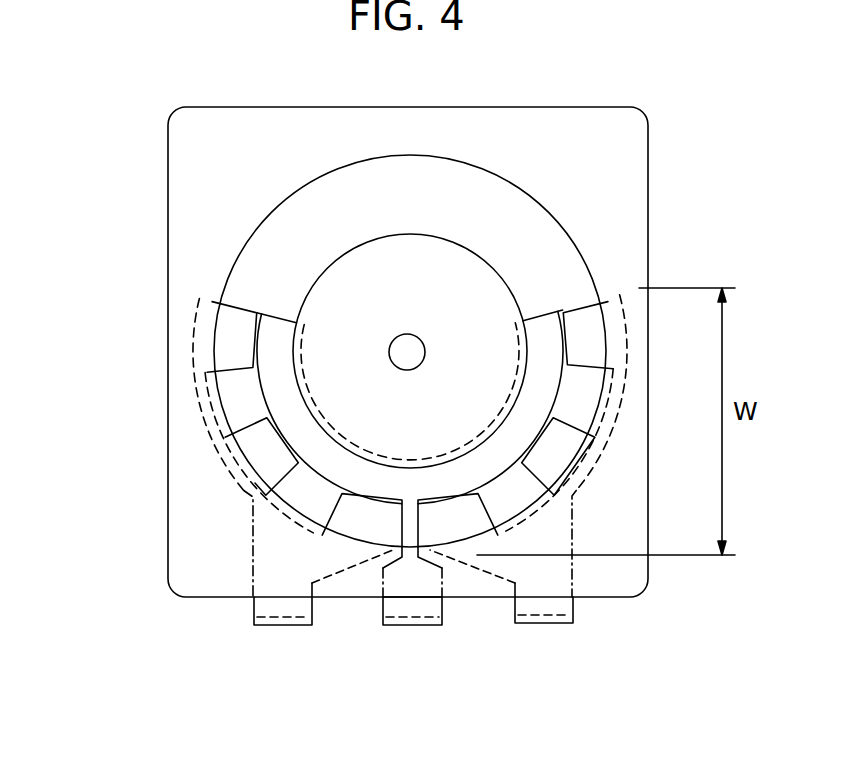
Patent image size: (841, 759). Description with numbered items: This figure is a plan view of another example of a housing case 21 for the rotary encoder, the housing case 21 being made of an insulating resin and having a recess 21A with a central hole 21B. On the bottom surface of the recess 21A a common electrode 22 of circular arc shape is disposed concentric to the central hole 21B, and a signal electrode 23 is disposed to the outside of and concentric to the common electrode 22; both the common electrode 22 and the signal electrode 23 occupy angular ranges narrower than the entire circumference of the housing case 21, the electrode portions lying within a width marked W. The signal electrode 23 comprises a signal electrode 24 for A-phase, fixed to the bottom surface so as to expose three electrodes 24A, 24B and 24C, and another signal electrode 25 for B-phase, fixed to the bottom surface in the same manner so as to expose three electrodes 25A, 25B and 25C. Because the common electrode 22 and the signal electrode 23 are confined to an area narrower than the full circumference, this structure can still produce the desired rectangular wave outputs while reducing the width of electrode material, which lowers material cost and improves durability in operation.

The housing case 21 is at (193, 148).
The recess 21A is at (532, 212).
The central hole 21B is at (398, 345).
The common electrode 22 is at (275, 340).
The signal electrode 23 is at (381, 514).
The signal electrode for A-phase 24 is at (207, 423).
The electrode 24A is at (218, 347).
The electrode 24B is at (253, 437).
The electrode 24C is at (348, 510).
The signal electrode for B-phase 25 is at (588, 514).
The electrode 25A is at (463, 520).
The electrode 25B is at (563, 448).
The electrode 25C is at (598, 348).